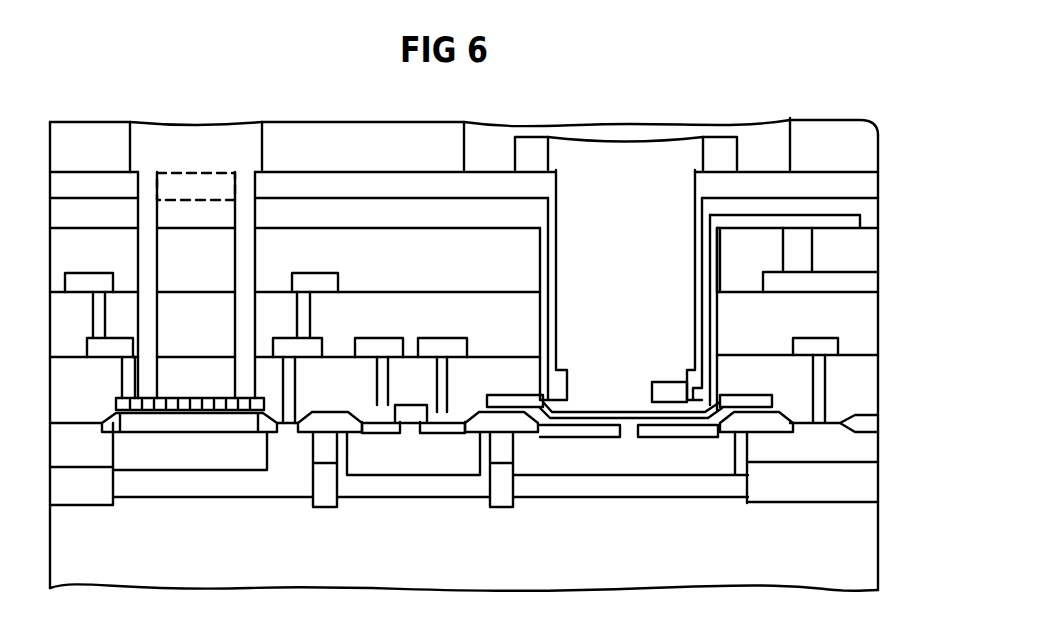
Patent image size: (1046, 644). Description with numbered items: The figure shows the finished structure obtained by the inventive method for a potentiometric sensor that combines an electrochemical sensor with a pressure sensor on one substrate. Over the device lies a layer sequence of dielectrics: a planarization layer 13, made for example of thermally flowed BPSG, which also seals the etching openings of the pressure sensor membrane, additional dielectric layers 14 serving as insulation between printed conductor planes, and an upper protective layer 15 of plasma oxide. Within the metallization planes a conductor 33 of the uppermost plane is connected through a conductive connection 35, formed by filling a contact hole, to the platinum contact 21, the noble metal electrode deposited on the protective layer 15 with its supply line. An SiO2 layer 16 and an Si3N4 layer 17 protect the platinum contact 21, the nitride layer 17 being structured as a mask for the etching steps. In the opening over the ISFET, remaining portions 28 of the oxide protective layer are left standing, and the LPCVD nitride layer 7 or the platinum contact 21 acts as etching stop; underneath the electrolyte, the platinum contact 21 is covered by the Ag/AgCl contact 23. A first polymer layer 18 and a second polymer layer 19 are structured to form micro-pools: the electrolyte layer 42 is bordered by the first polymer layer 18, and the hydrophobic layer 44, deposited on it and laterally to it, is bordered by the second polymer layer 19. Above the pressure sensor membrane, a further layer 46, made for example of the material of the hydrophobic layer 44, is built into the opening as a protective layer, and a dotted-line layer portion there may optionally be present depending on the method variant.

The nitride layer 7 is at (625, 412).
The planarization layer 13 is at (868, 401).
The dielectric layers 14 is at (868, 343).
The protective layer 15 is at (878, 258).
The SiO2 layer 16 is at (467, 207).
The Si3N4 layer 17 is at (370, 183).
The first polymer layer 18 is at (528, 150).
The second polymer layer 19 is at (102, 150).
The platinum contact 21 is at (738, 218).
The Ag/AgCl contact 23 is at (672, 390).
The remaining portions of the oxide layer 28 is at (530, 395).
The conductor 33 is at (822, 290).
The conductive connection 35 is at (800, 256).
The electrolyte layer 42 is at (634, 306).
The hydrophobic layer 44 is at (635, 132).
The further layer 46 is at (192, 150).